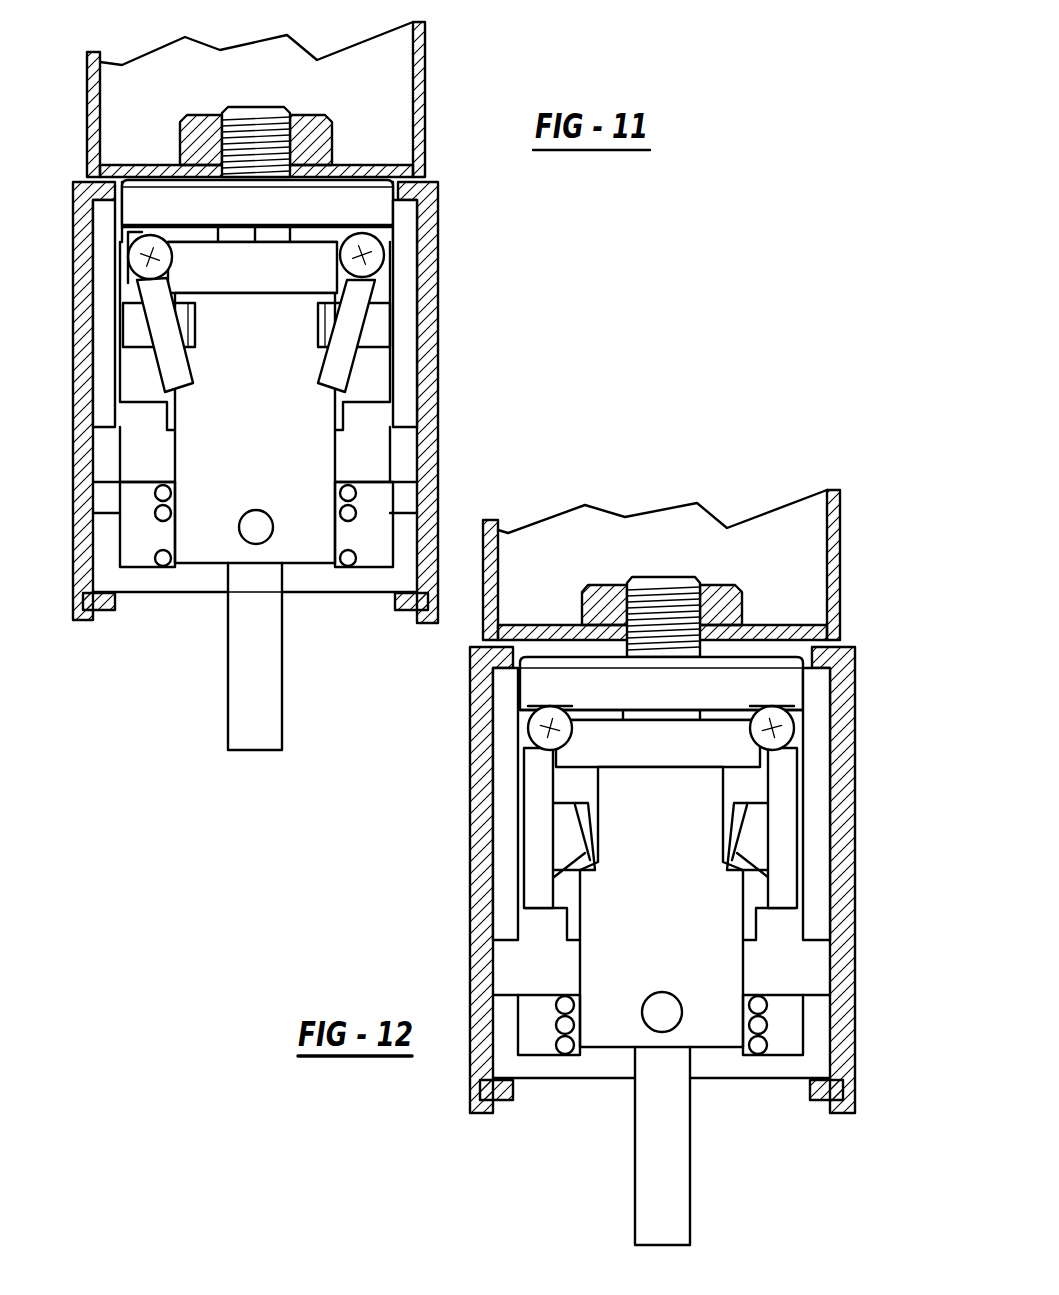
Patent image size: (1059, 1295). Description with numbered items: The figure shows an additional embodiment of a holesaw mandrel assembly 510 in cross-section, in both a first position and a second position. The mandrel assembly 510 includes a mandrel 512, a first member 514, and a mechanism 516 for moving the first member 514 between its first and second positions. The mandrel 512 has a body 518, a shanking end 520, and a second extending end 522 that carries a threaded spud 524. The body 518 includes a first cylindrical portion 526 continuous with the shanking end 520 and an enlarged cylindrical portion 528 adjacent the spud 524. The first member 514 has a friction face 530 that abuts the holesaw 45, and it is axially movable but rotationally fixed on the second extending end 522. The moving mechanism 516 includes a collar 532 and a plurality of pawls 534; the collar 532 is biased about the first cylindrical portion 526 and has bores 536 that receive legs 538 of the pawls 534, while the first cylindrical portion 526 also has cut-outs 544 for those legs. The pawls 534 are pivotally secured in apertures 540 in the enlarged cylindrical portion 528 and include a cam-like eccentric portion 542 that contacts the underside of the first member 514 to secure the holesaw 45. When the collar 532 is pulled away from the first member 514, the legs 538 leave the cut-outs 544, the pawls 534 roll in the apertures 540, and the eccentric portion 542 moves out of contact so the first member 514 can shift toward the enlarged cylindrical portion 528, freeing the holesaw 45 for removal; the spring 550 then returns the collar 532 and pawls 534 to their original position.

In FIG. 11, the holesaw 45 is at (428, 118).
In FIG. 12, the holesaw 45 is at (840, 548).
In FIG. 11, the mandrel assembly 510 is at (465, 252).
In FIG. 11, the mandrel 512 is at (203, 637).
In FIG. 11, the first member 514 is at (369, 206).
In FIG. 12, the first member 514 is at (768, 680).
In FIG. 11, the mechanism for moving the first member 516 is at (74, 434).
In FIG. 11, the body 518 is at (320, 545).
In FIG. 11, the shanking end 520 is at (275, 700).
In FIG. 11, the second extending end 522 is at (214, 164).
In FIG. 11, the threaded spud 524 is at (256, 127).
In FIG. 11, the first cylindrical portion 526 is at (440, 452).
In FIG. 11, the enlarged cylindrical portion 528 is at (385, 224).
In FIG. 11, the friction face 530 is at (419, 52).
In FIG. 11, the collar 532 is at (330, 318).
In FIG. 12, the collar 532 is at (735, 822).
In FIG. 11, the pawls 534 is at (372, 270).
In FIG. 12, the pawls 534 is at (783, 745).
In FIG. 11, the bores 536 is at (150, 376).
In FIG. 12, the bores 536 is at (757, 838).
In FIG. 11, the legs 538 is at (150, 332).
In FIG. 12, the legs 538 is at (520, 796).
In FIG. 11, the apertures 540 is at (160, 264).
In FIG. 12, the apertures 540 is at (540, 757).
In FIG. 11, the eccentric portion 542 is at (150, 237).
In FIG. 12, the eccentric portion 542 is at (750, 713).
In FIG. 11, the cut-outs 544 is at (415, 458).
In FIG. 12, the cut-outs 544 is at (585, 860).
In FIG. 12, the spring 550 is at (560, 1035).